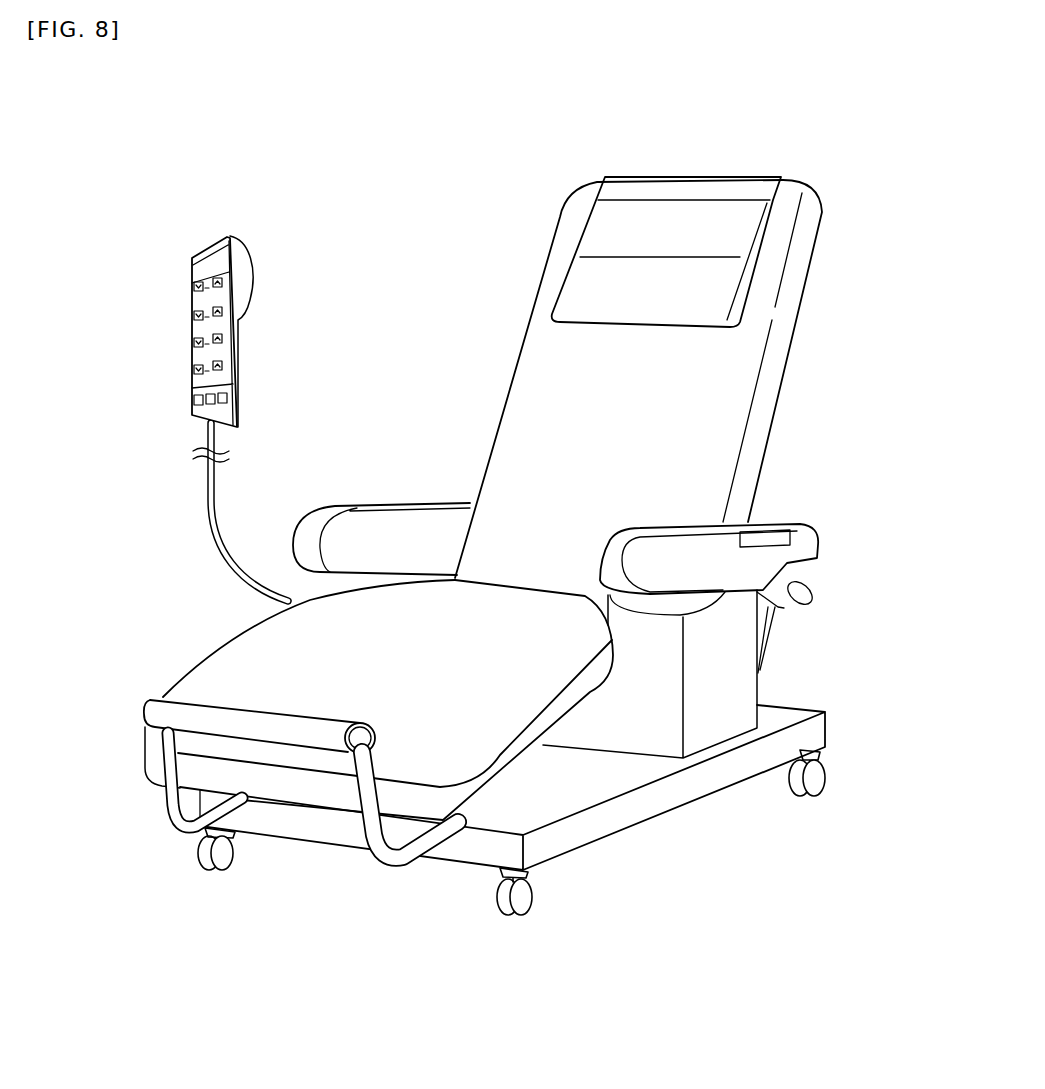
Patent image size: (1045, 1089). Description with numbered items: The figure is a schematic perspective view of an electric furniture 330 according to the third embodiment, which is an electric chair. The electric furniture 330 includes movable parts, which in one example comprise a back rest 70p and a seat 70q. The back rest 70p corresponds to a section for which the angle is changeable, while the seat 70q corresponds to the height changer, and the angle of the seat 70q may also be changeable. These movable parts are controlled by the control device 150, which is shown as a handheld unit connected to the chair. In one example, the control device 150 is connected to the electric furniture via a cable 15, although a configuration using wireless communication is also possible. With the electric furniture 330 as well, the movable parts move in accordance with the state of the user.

The electric furniture 330 is at (545, 498).
The back rest 70p is at (735, 404).
The seat 70q is at (480, 725).
The control device 150 is at (217, 265).
The cable 15 is at (205, 435).